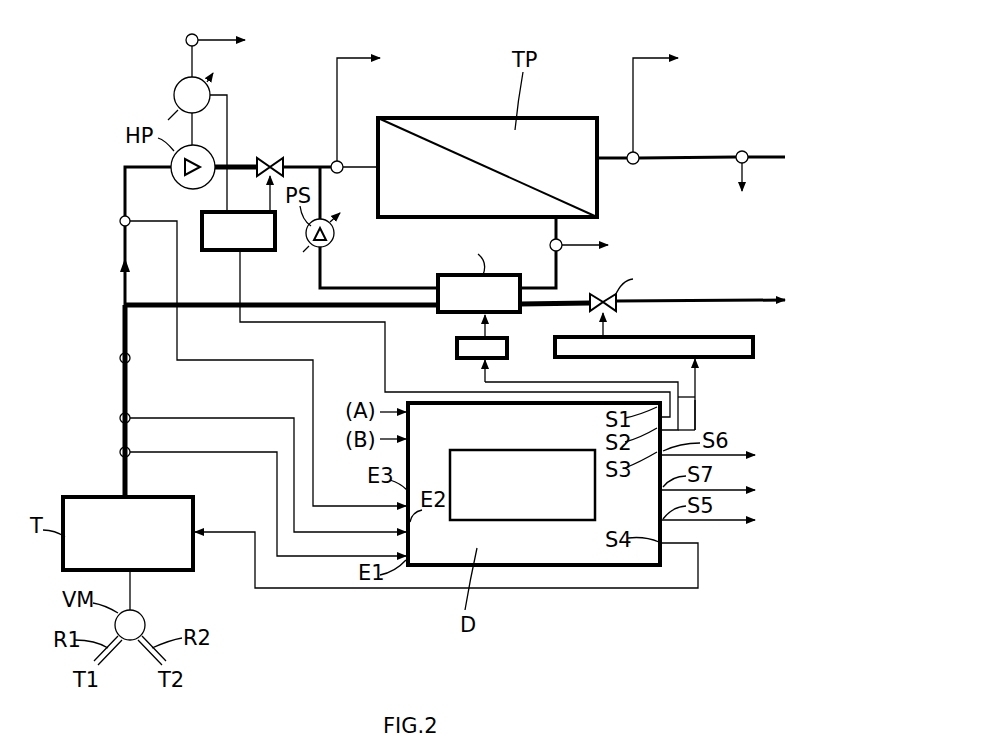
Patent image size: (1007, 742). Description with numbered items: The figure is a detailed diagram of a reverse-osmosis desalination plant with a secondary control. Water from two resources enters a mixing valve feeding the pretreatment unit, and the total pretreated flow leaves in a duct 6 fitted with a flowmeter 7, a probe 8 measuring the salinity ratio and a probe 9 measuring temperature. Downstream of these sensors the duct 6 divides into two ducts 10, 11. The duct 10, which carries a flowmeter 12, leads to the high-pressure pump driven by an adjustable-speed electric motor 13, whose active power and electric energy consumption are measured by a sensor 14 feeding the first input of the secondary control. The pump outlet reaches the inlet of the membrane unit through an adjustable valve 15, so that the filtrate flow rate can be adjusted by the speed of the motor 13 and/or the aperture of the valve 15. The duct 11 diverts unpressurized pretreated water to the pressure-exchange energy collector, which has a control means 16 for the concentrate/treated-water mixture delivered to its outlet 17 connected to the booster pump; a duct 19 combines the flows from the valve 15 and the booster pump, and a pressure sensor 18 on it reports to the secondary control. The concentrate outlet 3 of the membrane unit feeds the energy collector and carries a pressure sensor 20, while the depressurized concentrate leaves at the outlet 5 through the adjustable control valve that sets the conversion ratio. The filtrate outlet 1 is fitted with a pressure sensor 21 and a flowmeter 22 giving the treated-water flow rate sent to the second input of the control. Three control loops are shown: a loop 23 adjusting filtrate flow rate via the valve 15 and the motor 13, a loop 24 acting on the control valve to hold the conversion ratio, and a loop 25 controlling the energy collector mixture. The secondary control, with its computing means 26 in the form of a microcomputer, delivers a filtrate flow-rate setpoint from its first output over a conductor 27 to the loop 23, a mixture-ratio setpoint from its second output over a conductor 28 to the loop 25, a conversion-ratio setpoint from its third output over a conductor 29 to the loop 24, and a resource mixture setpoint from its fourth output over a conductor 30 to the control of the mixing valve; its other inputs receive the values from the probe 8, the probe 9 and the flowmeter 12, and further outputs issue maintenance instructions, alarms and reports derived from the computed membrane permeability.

The filtrate outlet 1 is at (602, 163).
The concentrate outlet 3 is at (551, 228).
The concentrate outlet of the energy collector 5 is at (600, 297).
The duct 6 is at (122, 488).
The flowmeter 7 is at (120, 356).
The salinity probe 8 is at (120, 450).
The temperature probe 9 is at (120, 416).
The duct 10 is at (122, 291).
The duct 11 is at (157, 303).
The flowmeter 12 is at (119, 217).
The adjustable-speed electric motor 13 is at (175, 90).
The sensor 14 is at (185, 37).
The adjustable valve 15 is at (265, 156).
The control means 16 is at (490, 320).
The outlet of the energy collector 17 is at (430, 277).
The pressure sensor 18 is at (332, 160).
The duct 19 is at (357, 161).
The pressure sensor 20 is at (550, 247).
The pressure sensor 21 is at (637, 155).
The flowmeter 22 is at (742, 151).
The control loop 23 is at (219, 252).
The control loop 24 is at (755, 346).
The control loop 25 is at (457, 349).
The computing means 26 is at (560, 503).
The conductor 27 is at (384, 343).
The conductor 28 is at (697, 395).
The conductor 29 is at (697, 409).
The conductor 30 is at (338, 591).